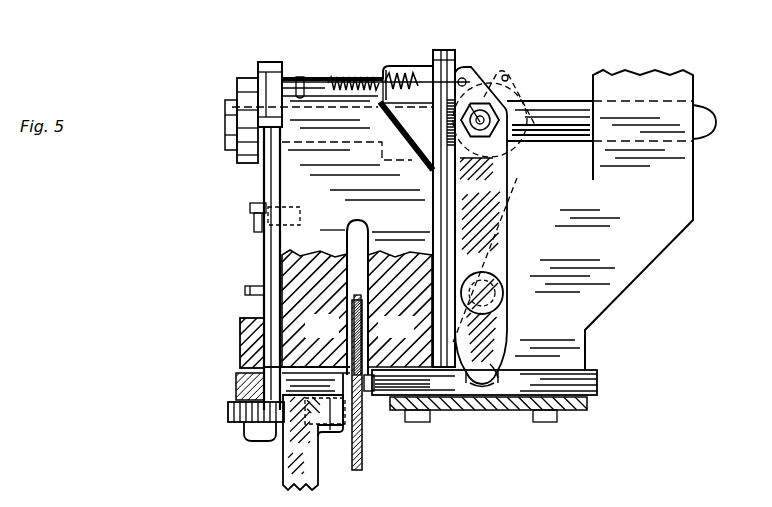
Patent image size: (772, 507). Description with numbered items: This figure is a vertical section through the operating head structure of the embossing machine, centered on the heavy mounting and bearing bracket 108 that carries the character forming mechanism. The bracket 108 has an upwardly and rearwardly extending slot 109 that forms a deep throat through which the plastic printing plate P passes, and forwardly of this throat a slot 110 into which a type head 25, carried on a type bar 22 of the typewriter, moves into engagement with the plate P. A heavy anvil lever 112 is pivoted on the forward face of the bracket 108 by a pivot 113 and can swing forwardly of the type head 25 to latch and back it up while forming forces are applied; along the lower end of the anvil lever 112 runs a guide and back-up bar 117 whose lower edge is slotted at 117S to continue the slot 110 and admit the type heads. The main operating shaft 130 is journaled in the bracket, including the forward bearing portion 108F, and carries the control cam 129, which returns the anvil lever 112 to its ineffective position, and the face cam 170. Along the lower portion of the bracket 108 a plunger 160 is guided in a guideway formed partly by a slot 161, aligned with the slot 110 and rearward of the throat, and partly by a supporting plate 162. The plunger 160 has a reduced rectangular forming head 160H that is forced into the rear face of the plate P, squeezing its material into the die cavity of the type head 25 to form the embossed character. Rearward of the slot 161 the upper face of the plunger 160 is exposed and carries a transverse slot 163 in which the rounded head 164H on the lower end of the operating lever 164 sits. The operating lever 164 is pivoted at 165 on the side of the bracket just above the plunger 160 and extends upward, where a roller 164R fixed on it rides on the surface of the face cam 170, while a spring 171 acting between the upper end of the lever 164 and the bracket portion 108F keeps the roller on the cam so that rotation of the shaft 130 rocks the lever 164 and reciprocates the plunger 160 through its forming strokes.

The control cam 129 is at (264, 60).
The bearing portion 108F is at (310, 117).
The spring 171 is at (332, 86).
The face cam 170 is at (445, 50).
The main operating shaft 130 is at (555, 110).
The roller 164R is at (492, 153).
The mounting and bearing bracket 108 is at (670, 207).
The pivot 113 is at (252, 222).
The slot 109 is at (362, 238).
The anvil lever 112 is at (263, 266).
The pivot 165 is at (495, 290).
The operating lever 164 is at (482, 328).
The transverse slot 163 is at (488, 378).
The slot 110 is at (323, 352).
The slot 161 is at (412, 350).
The guide and back-up bar 117 is at (240, 348).
The slot 117S is at (235, 388).
The plunger 160 is at (597, 378).
The type bar 22 is at (290, 473).
The type head 25 is at (343, 387).
The forming head 160H is at (372, 395).
The rounded head 164H is at (488, 385).
The supporting plate 162 is at (518, 410).
The printing plate P is at (367, 453).